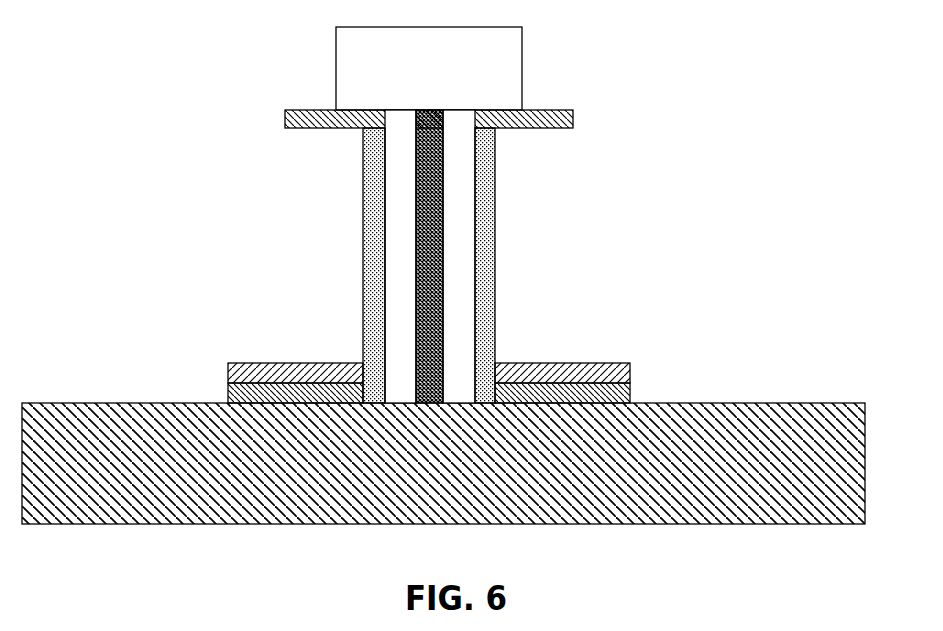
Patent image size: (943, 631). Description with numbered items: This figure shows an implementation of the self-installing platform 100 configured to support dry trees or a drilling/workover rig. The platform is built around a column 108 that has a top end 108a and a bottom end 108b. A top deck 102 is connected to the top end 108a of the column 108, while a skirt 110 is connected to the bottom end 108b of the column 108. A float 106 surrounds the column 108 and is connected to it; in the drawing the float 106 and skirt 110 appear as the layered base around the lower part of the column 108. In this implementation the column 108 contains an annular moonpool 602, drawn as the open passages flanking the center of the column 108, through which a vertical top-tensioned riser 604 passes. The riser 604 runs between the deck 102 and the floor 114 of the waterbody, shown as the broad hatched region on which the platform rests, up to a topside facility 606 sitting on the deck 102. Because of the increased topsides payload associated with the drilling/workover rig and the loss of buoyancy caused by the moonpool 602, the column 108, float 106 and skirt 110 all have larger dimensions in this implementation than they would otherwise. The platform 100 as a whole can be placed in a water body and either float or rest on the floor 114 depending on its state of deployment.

The self-installing platform 100 is at (188, 79).
The top deck 102 is at (555, 110).
The float 106 is at (630, 373).
The column 108 is at (495, 277).
The top end of the column 108a is at (363, 130).
The bottom end of the column 108b is at (363, 380).
The skirt 110 is at (630, 390).
The floor 114 is at (157, 403).
The annular moonpool 602 is at (400, 283).
The vertical top-tensioned riser 604 is at (442, 235).
The topside facility 606 is at (453, 82).